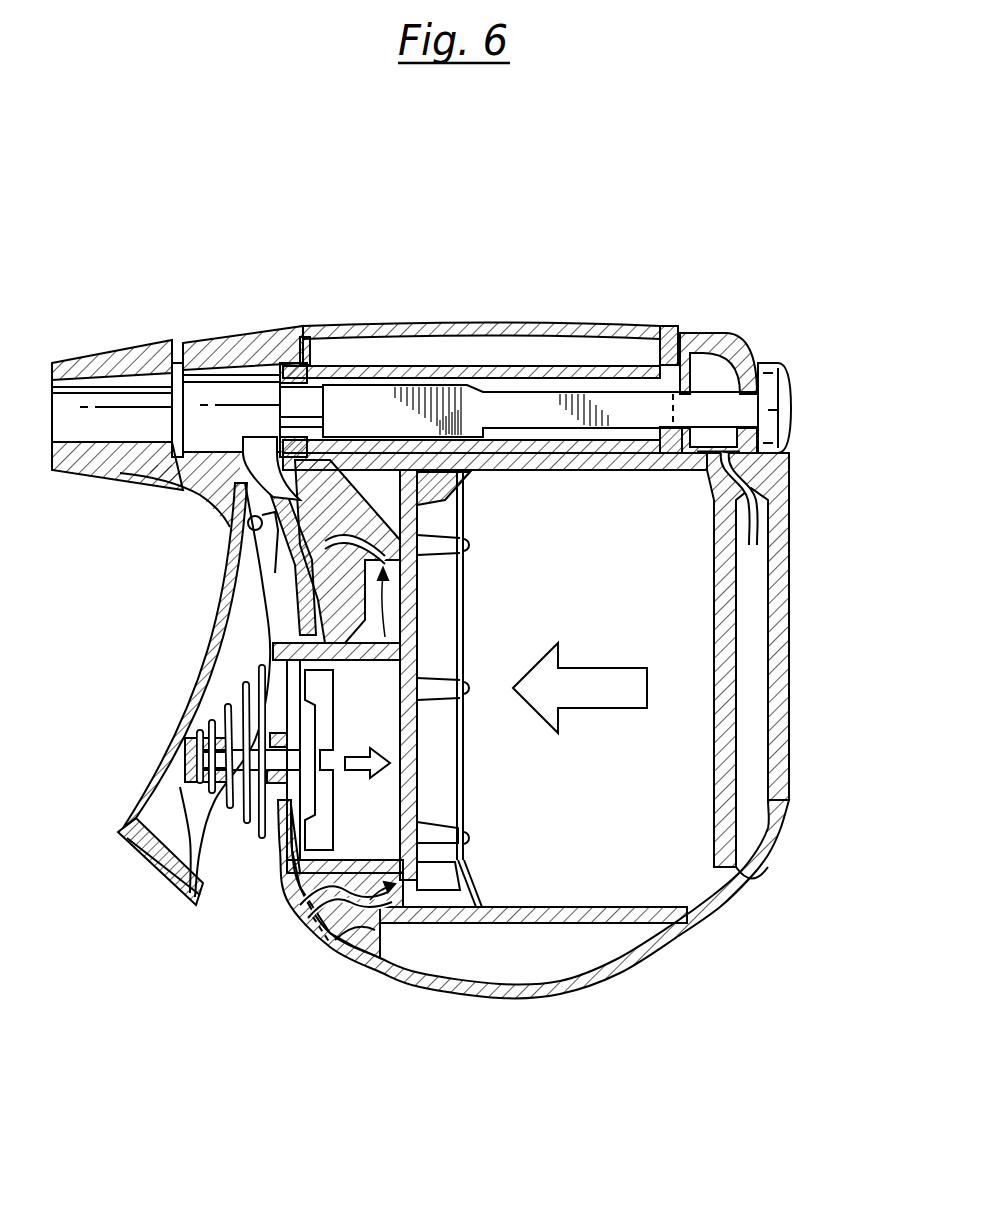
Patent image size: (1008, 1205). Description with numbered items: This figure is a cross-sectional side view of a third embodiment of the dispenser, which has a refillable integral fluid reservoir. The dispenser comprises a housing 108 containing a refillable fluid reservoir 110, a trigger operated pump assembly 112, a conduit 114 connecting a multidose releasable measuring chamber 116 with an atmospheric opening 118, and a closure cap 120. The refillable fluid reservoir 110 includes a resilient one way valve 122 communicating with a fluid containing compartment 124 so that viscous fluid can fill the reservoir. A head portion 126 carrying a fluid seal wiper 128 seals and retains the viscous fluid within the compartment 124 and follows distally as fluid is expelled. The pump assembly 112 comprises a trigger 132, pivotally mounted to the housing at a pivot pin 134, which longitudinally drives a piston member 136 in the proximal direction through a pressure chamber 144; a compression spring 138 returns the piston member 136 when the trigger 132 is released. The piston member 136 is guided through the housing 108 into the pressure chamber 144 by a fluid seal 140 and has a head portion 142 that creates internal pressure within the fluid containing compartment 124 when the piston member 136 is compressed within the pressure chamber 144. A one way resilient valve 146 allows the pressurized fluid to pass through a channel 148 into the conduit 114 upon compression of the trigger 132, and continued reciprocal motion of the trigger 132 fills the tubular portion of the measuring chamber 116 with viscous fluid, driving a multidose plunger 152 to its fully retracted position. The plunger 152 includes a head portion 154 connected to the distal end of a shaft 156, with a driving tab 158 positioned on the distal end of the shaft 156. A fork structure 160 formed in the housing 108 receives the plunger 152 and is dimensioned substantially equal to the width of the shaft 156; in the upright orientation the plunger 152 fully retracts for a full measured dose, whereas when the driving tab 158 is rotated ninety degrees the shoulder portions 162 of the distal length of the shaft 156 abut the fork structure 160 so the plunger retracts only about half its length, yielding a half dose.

The housing 108 is at (785, 737).
The refillable fluid reservoir 110 is at (613, 860).
The trigger operated pump assembly 112 is at (287, 695).
The conduit 114 is at (213, 403).
The multidose releasable measuring chamber 116 is at (498, 362).
The atmospheric opening 118 is at (173, 470).
The closure cap 120 is at (105, 355).
The resilient one way valve 122 is at (350, 917).
The fluid containing compartment 124 is at (687, 867).
The head portion 126 is at (430, 830).
The fluid seal wiper 128 is at (447, 900).
The trigger 132 is at (160, 870).
The pivot pin 134 is at (235, 527).
The piston member 136 is at (213, 787).
The compression spring 138 is at (243, 830).
The fluid seal 140 is at (280, 737).
The head portion 142 is at (286, 840).
The pressure chamber 144 is at (290, 907).
The one way resilient valve 146 is at (353, 563).
The channel 148 is at (233, 523).
The multidose plunger 152 is at (617, 407).
The head portion 154 is at (300, 373).
The shaft 156 is at (690, 337).
The driving tab 158 is at (773, 403).
The fork structure 160 is at (750, 353).
The shoulder portions 162 is at (483, 377).